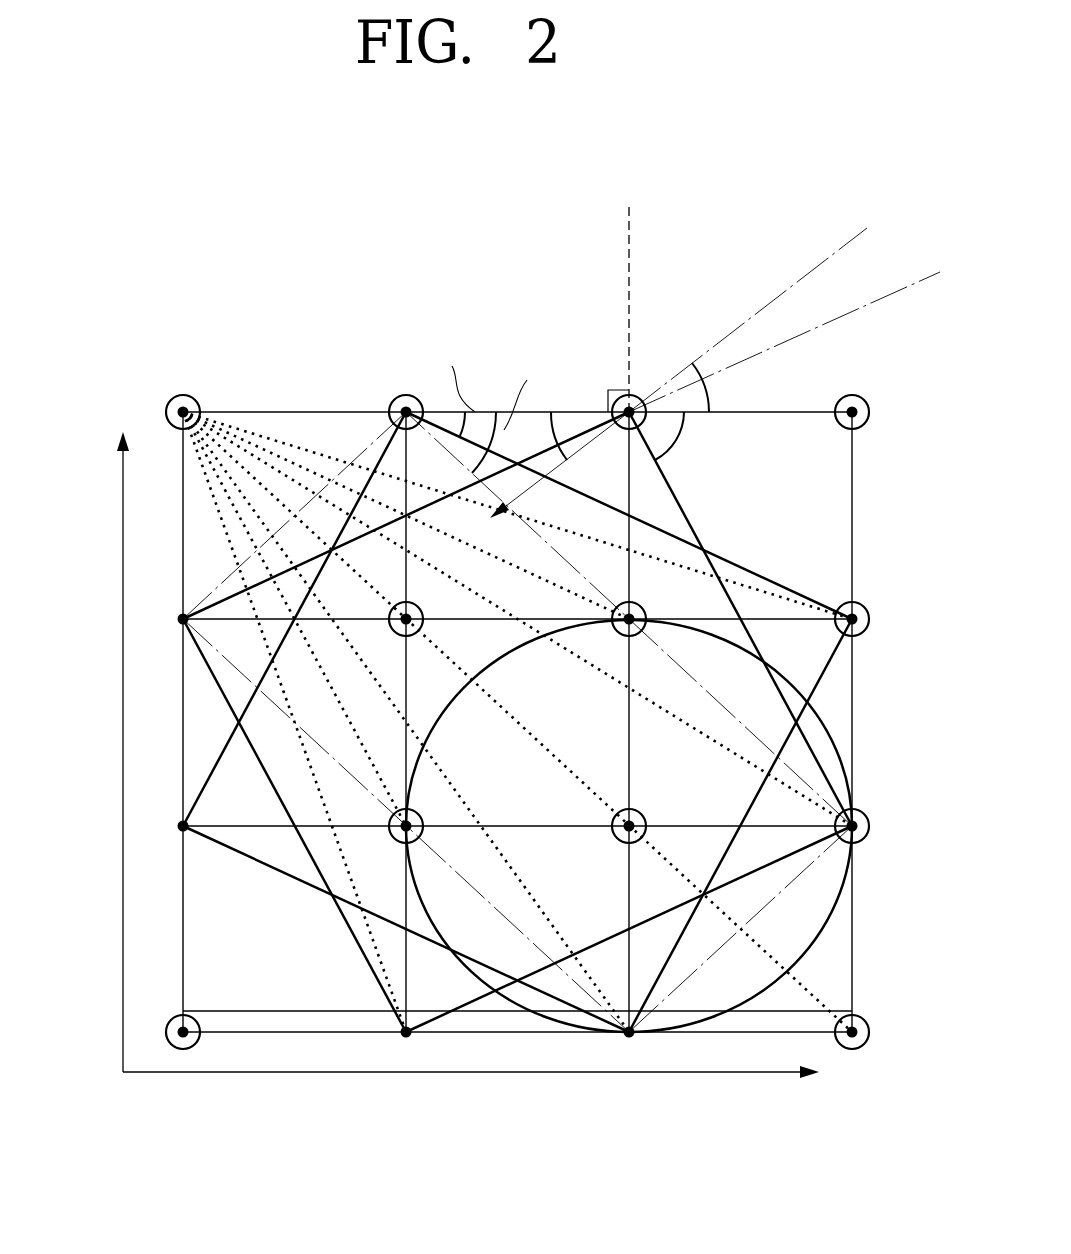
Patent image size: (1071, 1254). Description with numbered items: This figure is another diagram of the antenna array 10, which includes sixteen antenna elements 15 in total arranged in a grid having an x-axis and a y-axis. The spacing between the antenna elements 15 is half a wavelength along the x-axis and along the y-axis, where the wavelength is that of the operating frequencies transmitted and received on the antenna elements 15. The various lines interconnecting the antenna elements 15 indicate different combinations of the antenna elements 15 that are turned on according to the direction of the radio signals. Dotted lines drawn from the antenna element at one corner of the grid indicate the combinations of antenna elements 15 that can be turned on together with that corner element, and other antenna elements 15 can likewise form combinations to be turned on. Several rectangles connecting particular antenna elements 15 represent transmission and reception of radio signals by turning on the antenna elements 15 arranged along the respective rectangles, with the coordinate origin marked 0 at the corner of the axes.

The antenna array 10 is at (282, 247).
The antenna elements 15 is at (188, 394).
The origin (0,0) of coordinate system 0 is at (443, 757).